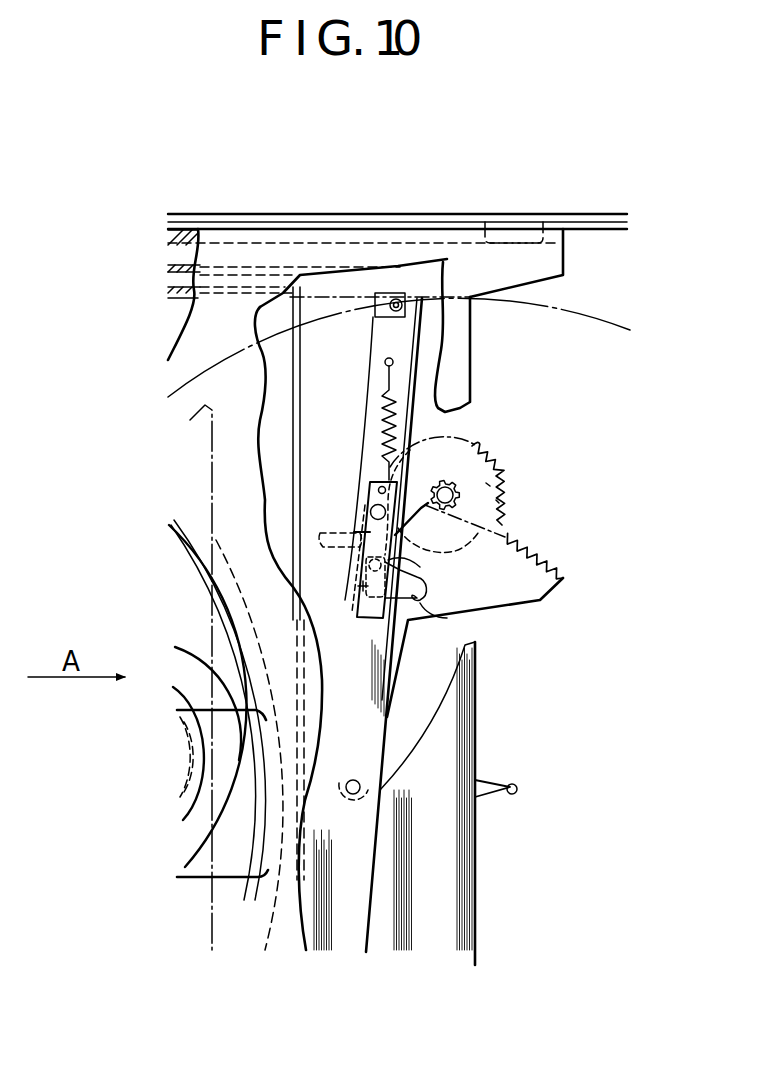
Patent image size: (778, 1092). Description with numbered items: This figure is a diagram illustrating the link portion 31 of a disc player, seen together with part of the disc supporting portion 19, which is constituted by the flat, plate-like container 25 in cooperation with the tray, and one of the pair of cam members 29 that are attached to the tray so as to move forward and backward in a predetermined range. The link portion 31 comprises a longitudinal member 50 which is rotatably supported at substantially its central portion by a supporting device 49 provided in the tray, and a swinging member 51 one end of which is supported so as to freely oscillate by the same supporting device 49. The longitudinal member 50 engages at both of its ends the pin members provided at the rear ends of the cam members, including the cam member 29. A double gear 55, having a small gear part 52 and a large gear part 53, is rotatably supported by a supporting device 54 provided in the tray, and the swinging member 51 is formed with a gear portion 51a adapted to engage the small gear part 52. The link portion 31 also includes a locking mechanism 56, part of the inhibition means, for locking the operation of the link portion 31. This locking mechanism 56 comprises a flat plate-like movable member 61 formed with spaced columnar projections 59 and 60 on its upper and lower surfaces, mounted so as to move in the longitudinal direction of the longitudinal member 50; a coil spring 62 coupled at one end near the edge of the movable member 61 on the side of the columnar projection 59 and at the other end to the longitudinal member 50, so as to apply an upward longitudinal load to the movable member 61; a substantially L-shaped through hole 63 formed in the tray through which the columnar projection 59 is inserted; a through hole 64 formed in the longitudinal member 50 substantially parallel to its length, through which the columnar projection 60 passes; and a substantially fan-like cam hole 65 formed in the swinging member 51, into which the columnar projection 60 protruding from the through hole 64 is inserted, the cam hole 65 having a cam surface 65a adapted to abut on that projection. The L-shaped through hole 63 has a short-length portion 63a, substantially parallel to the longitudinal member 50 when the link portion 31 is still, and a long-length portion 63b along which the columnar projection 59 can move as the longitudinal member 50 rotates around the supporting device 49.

The disc supporting portion 19 is at (573, 243).
The container 25 is at (303, 935).
The cam member 29 is at (388, 265).
The link portion 31 is at (615, 373).
The supporting device 49 is at (361, 787).
The longitudinal member 50 is at (410, 380).
The swinging member 51 is at (497, 600).
The gear portion 51a is at (536, 555).
The small gear part 52 is at (460, 479).
The large gear part 53 is at (489, 482).
The supporting device 54 is at (440, 492).
The double gear 55 is at (515, 501).
The locking mechanism 56 is at (321, 517).
The columnar projection 59 is at (369, 512).
The columnar projection 60 is at (365, 572).
The movable member 61 is at (360, 490).
The coil spring 62 is at (380, 430).
The L-shaped through hole 63 is at (353, 530).
The short-length portion 63a is at (367, 497).
The long-length portion 63b is at (322, 528).
The through hole 64 is at (358, 588).
The cam hole 65 is at (422, 606).
The cam surface 65a is at (427, 578).